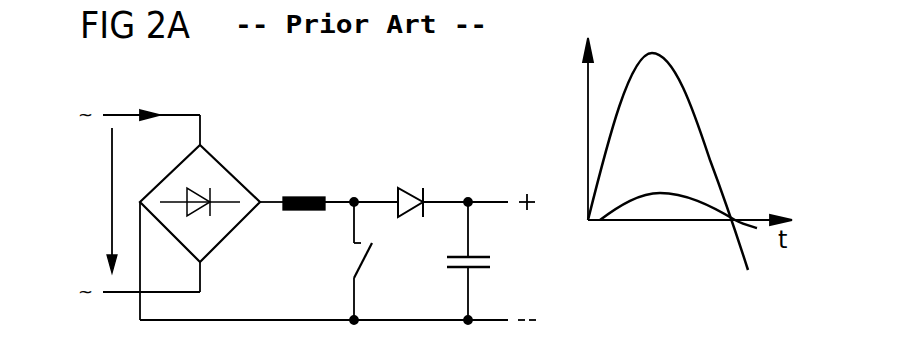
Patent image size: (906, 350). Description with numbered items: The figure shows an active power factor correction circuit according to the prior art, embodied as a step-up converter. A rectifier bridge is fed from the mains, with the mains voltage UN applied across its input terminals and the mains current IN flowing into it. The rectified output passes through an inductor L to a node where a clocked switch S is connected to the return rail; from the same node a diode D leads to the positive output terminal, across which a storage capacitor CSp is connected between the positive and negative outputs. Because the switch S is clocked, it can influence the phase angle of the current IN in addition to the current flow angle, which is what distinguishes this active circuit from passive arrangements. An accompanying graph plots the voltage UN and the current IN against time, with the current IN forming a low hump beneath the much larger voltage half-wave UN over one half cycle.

The current IN is at (668, 166).
The mains input voltage UN is at (717, 102).
The inductor L is at (300, 196).
The diode D is at (412, 190).
The clocked switch S is at (365, 262).
The storage capacitor CSp is at (492, 263).